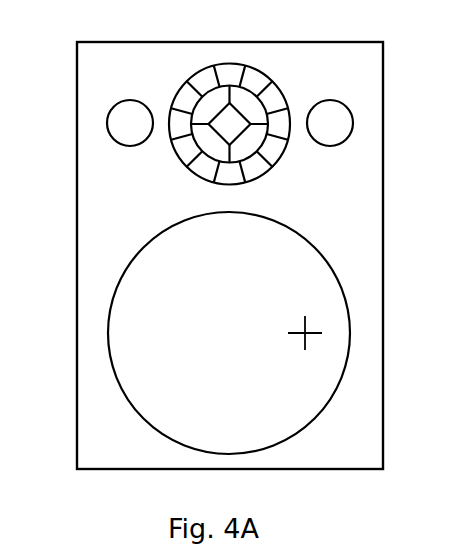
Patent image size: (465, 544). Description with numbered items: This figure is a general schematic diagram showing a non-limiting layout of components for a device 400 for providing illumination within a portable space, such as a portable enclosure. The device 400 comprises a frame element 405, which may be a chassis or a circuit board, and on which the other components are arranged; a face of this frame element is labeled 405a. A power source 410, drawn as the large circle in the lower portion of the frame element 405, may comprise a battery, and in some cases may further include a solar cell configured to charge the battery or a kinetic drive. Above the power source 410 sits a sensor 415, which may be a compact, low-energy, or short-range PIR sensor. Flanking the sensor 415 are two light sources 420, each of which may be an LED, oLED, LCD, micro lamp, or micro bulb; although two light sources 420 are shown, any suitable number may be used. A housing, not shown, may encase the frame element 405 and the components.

The device 400 is at (236, 289).
The frame element 405 is at (77, 438).
The front face of housing 405a is at (368, 454).
The power source 410 is at (242, 416).
The sensor 415 is at (283, 152).
The light sources 420 is at (142, 143).